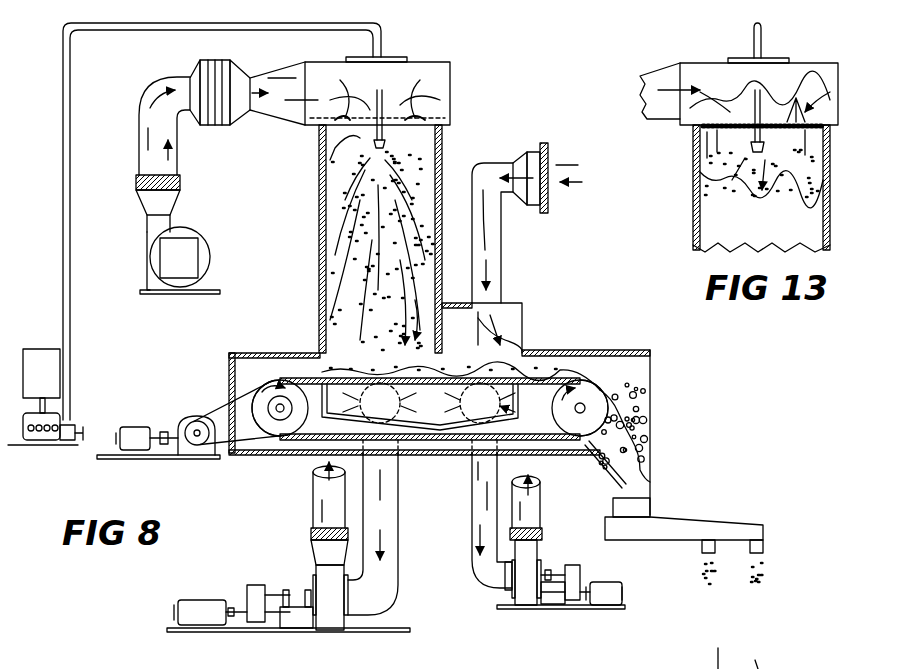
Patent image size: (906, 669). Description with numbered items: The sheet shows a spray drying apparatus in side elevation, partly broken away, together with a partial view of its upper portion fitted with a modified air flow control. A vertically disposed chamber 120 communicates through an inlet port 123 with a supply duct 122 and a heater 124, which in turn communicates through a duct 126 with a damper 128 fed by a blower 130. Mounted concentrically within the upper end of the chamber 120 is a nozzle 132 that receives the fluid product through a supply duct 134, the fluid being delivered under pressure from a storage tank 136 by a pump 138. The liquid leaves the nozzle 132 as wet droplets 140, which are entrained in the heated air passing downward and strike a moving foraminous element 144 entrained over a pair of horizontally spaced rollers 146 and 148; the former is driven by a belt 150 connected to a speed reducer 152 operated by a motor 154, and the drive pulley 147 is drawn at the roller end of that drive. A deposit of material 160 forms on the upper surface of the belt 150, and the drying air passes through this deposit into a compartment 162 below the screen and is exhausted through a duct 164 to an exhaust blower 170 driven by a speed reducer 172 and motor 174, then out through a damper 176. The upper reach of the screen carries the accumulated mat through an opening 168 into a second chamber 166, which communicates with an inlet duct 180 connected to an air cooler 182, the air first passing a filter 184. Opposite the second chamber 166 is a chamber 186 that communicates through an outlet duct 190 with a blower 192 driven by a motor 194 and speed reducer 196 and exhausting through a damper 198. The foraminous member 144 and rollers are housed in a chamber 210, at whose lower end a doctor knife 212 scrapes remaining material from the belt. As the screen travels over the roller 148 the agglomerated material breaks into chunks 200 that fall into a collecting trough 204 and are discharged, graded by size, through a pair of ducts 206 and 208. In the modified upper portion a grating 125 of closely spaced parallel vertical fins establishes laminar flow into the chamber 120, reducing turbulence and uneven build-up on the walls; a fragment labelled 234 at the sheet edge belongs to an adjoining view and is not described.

In FIG. 8, the chamber 120 is at (319, 208).
In FIG. 13, the chamber 120 is at (820, 210).
In FIG. 8, the supply duct 122 is at (290, 118).
In FIG. 13, the supply duct 122 is at (670, 125).
In FIG. 8, the inlet port 123 is at (400, 108).
In FIG. 8, the heater 124 is at (205, 60).
In FIG. 13, the grating 125 is at (763, 96).
In FIG. 8, the duct 126 is at (140, 120).
In FIG. 8, the damper 128 is at (138, 188).
In FIG. 8, the blower 130 is at (150, 255).
In FIG. 8, the nozzle 132 is at (372, 148).
In FIG. 13, the nozzle 132 is at (762, 153).
In FIG. 8, the supply duct 134 is at (298, 20).
In FIG. 13, the supply duct 134 is at (762, 37).
In FIG. 8, the storage tank 136 is at (57, 372).
In FIG. 8, the pump 138 is at (57, 418).
In FIG. 8, the wet droplets 140 is at (322, 262).
In FIG. 8, the foraminous element 144 is at (330, 366).
In FIG. 8, the roller 146 is at (270, 392).
In FIG. 8, the drive pulley 147 is at (280, 408).
In FIG. 8, the roller 148 is at (565, 440).
In FIG. 8, the belt 150 is at (218, 460).
In FIG. 8, the speed reducer 152 is at (185, 418).
In FIG. 8, the motor 154 is at (135, 456).
In FIG. 8, the deposit of material 160 is at (360, 365).
In FIG. 8, the compartment 162 is at (335, 425).
In FIG. 8, the duct 164 is at (388, 504).
In FIG. 8, the second chamber 166 is at (520, 330).
In FIG. 8, the opening 168 is at (414, 320).
In FIG. 8, the exhaust blower 170 is at (332, 620).
In FIG. 8, the speed reducer 172 is at (262, 576).
In FIG. 8, the motor 174 is at (195, 585).
In FIG. 8, the damper 176 is at (312, 531).
In FIG. 8, the inlet duct 180 is at (497, 293).
In FIG. 8, the air cooler 182 is at (532, 205).
In FIG. 8, the filter 184 is at (560, 126).
In FIG. 8, the chamber 186 is at (535, 402).
In FIG. 8, the outlet duct 190 is at (478, 560).
In FIG. 8, the blower 192 is at (515, 595).
In FIG. 8, the motor 194 is at (608, 595).
In FIG. 8, the speed reducer 196 is at (575, 606).
In FIG. 8, the damper 198 is at (538, 531).
In FIG. 8, the chunks 200 is at (630, 433).
In FIG. 8, the collecting trough 204 is at (705, 525).
In FIG. 8, the duct 206 is at (706, 548).
In FIG. 8, the duct 208 is at (760, 545).
In FIG. 8, the chamber 210 is at (640, 388).
In FIG. 8, the doctor knife 212 is at (590, 471).
In FIG. 8, the partial element 234 is at (750, 654).